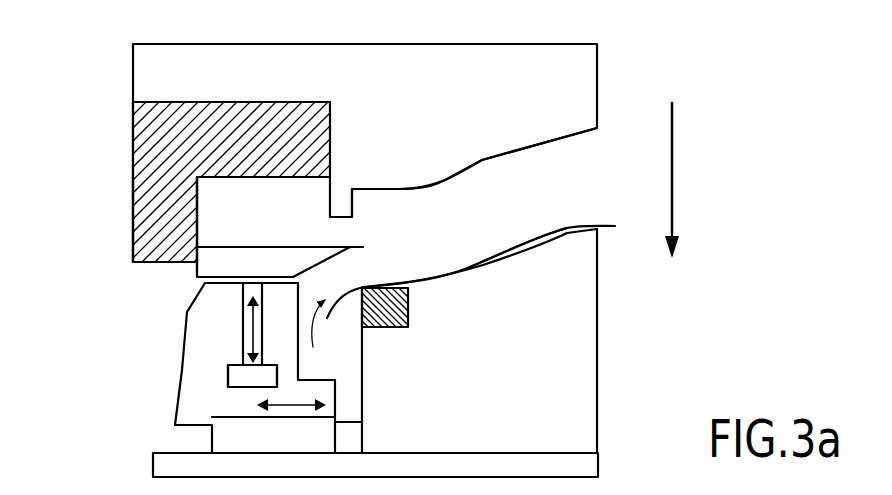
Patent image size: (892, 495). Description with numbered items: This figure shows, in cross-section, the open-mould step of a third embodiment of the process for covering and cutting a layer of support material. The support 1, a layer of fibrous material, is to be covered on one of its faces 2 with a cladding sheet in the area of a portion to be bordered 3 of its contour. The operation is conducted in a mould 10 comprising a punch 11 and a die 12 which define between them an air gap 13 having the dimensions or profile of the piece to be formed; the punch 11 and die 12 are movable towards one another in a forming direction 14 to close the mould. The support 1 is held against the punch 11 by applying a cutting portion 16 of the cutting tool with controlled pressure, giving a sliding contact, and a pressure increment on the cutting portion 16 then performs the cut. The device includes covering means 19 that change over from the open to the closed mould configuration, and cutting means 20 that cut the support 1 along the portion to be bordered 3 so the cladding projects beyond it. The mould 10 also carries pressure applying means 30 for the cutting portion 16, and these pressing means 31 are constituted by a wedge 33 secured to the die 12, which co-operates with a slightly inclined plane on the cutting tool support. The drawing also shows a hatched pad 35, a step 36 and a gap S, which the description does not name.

The support 1 is at (578, 228).
The face 2 is at (512, 230).
The portion to be bordered 3 is at (326, 333).
The mould 10 is at (145, 334).
The punch 11 is at (573, 362).
The die 12 is at (573, 72).
The air gap 13 is at (446, 208).
The forming direction 14 is at (672, 183).
The cutting portion 16 is at (363, 247).
The covering means 19 is at (252, 376).
The cutting means 20 is at (251, 238).
The pressure applying means 30 is at (114, 158).
The pressing means 31 is at (114, 226).
The wedge 33 is at (140, 238).
The hatched support pad 35 is at (362, 310).
The step 36 is at (348, 202).
The gap S is at (312, 255).